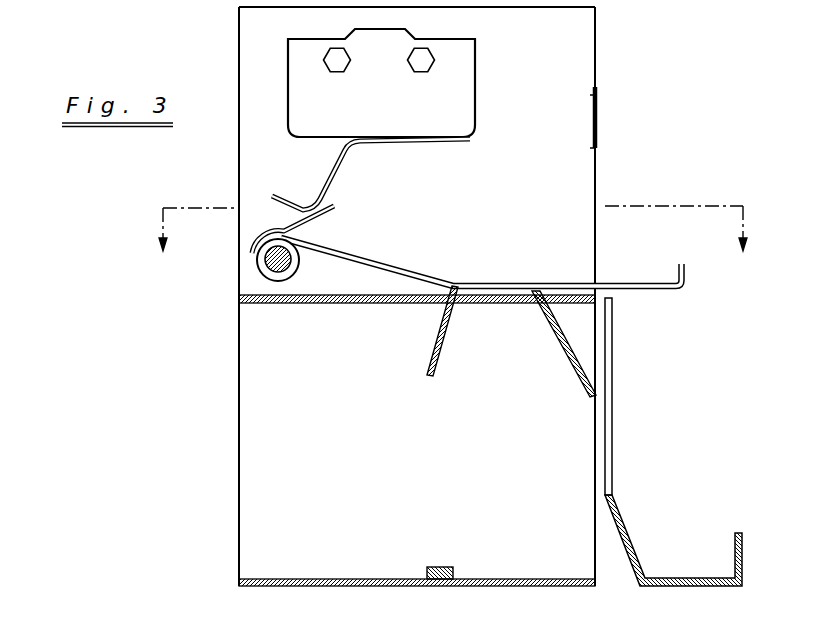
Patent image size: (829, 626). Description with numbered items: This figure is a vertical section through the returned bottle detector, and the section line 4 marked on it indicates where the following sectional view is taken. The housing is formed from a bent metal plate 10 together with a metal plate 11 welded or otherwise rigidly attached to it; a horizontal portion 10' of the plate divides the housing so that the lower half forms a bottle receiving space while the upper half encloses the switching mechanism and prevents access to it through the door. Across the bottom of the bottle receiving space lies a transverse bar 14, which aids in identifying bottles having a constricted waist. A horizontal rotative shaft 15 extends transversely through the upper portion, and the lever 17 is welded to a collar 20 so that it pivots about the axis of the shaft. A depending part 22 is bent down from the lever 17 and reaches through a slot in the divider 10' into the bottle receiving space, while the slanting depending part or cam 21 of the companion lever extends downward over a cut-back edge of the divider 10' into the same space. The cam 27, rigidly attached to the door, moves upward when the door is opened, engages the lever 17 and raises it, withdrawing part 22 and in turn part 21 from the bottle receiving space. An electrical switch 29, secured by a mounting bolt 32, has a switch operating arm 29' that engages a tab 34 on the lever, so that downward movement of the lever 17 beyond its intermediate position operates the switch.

The metal plate 10 is at (400, 296).
The horizontal portion of plate 10' is at (417, 318).
The metal plate 11 is at (597, 92).
The transverse bar 14 is at (447, 566).
The horizontal rotative shaft 15 is at (291, 257).
The lever 17 is at (374, 259).
The collar 20 is at (256, 265).
The slanting depending part or cam 21 is at (565, 346).
The depending part 22 is at (438, 350).
The cam 27 is at (612, 450).
The electrical switch 29 is at (381, 76).
The switch operating arm 29' is at (371, 174).
The mounting bolt 32 is at (351, 60).
The tab 34 is at (314, 219).
The section line 4- 4 is at (452, 241).